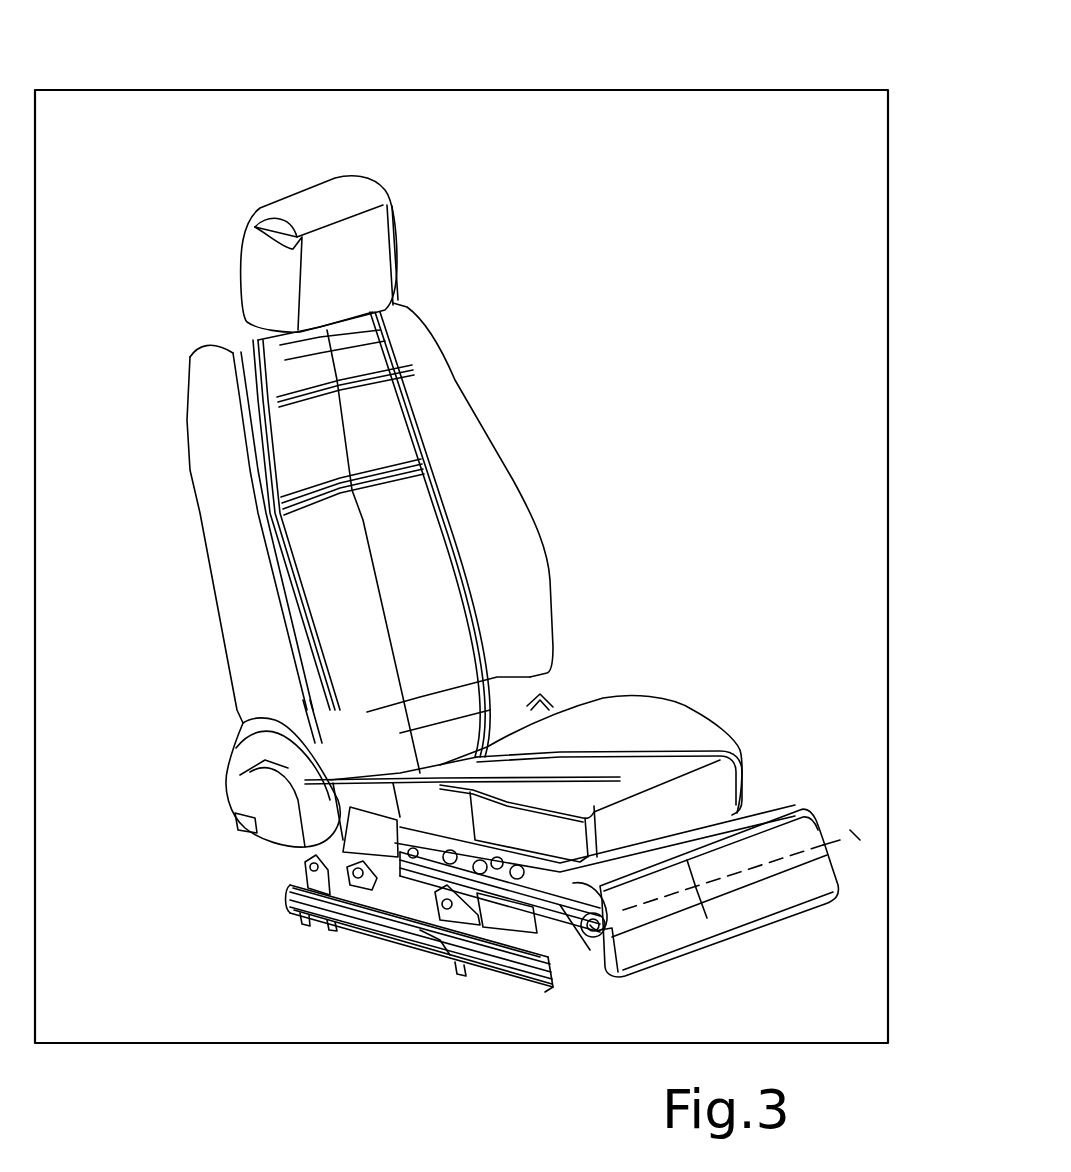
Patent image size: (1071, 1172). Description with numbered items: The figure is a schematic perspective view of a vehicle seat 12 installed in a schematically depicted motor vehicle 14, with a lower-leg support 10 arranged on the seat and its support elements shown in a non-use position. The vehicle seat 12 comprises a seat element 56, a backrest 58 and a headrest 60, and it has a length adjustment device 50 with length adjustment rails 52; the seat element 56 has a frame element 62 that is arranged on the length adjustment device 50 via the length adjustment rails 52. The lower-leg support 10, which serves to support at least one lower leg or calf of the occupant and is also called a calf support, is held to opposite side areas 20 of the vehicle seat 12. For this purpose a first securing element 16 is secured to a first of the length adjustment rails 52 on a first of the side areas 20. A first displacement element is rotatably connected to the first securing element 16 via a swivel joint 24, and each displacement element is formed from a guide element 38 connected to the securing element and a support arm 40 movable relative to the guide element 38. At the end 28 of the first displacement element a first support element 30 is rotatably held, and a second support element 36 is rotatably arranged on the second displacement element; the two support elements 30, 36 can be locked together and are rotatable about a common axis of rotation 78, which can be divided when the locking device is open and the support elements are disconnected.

The lower-leg support 10 is at (727, 892).
The vehicle seat 12 is at (505, 418).
The motor vehicle 14 is at (737, 88).
The first securing element 16 is at (448, 940).
The side areas 20 is at (768, 754).
The swivel joint 24 is at (460, 905).
The end 28 is at (622, 960).
The first support element 30 is at (690, 940).
The second support element 36 is at (790, 903).
The guide element 38 is at (500, 915).
The support arm 40 is at (570, 940).
The length adjustment device 50 is at (290, 906).
The length adjustment rails 52 is at (290, 890).
The seat element 56 is at (628, 765).
The backrest 58 is at (273, 523).
The headrest 60 is at (367, 193).
The frame element 62 is at (312, 863).
The axis of rotation 78 is at (856, 835).